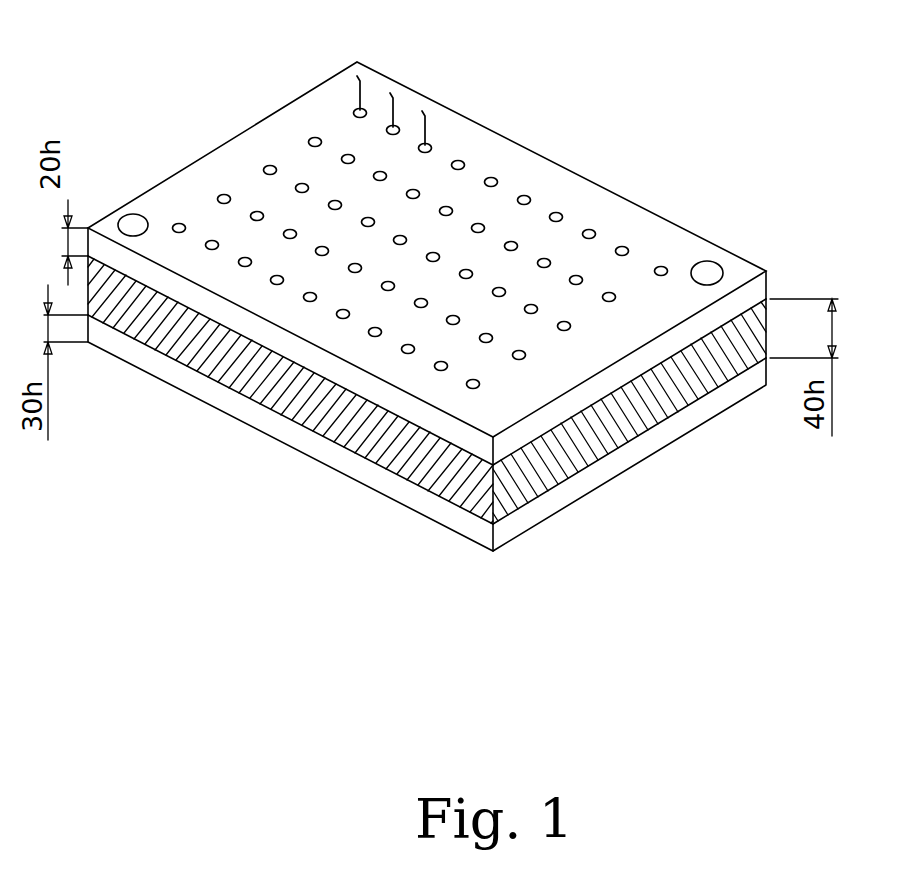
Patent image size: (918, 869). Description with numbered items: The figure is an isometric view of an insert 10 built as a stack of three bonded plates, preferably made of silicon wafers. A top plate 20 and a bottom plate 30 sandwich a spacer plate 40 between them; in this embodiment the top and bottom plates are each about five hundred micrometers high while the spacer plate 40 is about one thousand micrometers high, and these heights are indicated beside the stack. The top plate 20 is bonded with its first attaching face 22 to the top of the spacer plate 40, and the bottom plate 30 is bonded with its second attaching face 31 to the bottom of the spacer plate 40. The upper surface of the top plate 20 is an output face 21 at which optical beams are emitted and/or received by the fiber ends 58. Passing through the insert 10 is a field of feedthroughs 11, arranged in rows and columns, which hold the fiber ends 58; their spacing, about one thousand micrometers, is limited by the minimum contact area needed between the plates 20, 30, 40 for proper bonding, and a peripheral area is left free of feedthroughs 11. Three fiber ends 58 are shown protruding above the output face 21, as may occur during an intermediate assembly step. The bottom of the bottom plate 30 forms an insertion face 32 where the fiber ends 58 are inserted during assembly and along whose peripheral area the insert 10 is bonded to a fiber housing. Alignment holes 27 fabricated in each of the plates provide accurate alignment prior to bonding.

The insert 10 is at (765, 142).
The feedthroughs 11 is at (495, 178).
The top plate 20 is at (558, 410).
The output face 21 is at (647, 230).
The first attaching face 22 is at (655, 427).
The alignment holes 27 is at (125, 213).
The bottom plate 30 is at (560, 503).
The second attaching face 31 is at (540, 530).
The insertion face 32 is at (485, 547).
The spacer plate 40 is at (377, 460).
The fiber ends 58 is at (425, 112).